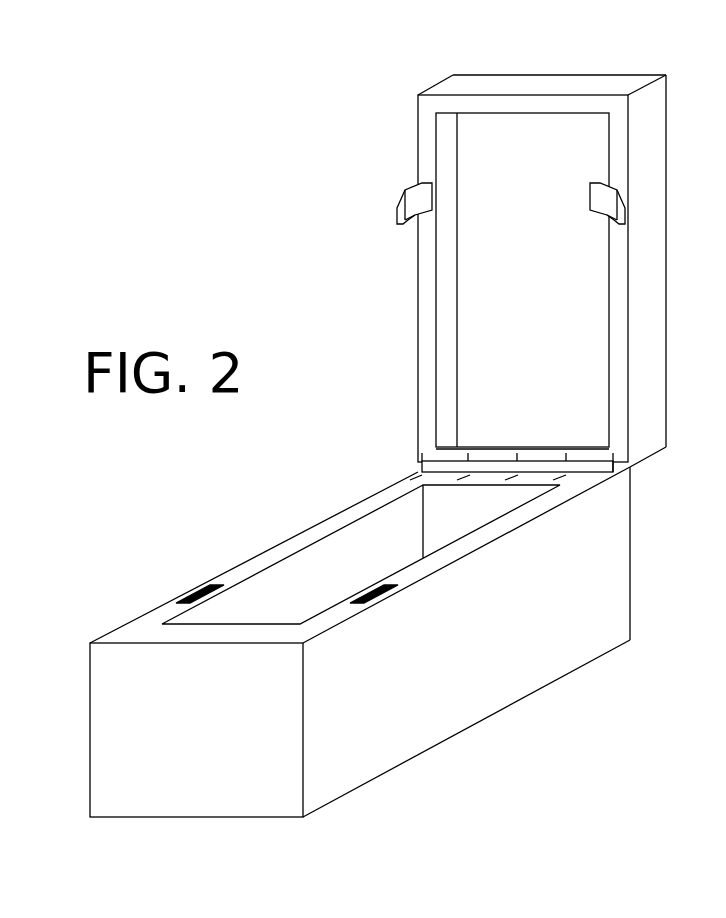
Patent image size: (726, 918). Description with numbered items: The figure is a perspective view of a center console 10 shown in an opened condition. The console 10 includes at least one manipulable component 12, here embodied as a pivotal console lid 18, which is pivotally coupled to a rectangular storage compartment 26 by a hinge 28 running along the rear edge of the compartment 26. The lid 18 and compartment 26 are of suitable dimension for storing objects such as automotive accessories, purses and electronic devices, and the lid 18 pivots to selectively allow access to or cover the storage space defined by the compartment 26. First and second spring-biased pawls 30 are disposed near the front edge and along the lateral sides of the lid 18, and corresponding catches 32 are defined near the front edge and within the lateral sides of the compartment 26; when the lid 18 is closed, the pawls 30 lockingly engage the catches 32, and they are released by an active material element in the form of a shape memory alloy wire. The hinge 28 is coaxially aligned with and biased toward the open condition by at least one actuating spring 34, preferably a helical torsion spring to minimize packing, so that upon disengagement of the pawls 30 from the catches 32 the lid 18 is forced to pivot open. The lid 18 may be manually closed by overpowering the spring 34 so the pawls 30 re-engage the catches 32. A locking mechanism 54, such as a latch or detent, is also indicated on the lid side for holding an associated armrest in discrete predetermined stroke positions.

The center console 10 is at (296, 253).
The manipulable component 12 is at (522, 271).
The console lid 18 is at (418, 140).
The storage compartment 26 is at (515, 646).
The hinge 28 is at (437, 460).
The spring-biased pawl 30 is at (402, 226).
The catch 32 is at (203, 583).
The actuating spring 34 is at (628, 462).
The locking mechanism 54 is at (636, 173).